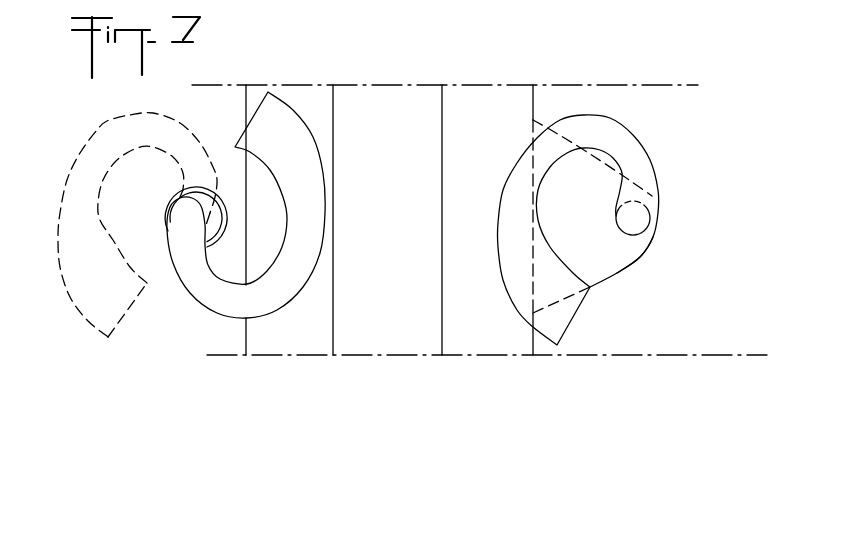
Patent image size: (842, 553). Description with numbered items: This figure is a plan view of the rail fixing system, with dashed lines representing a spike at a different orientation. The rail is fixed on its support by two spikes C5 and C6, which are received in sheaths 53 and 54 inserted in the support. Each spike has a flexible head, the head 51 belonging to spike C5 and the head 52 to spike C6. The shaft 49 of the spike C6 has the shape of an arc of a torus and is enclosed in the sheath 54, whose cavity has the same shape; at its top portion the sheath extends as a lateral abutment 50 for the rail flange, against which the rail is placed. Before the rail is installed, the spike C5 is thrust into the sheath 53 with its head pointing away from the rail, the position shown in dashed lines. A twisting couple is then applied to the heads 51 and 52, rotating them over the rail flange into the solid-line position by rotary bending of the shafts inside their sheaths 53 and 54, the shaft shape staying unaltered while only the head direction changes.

The shaft 49 is at (645, 231).
The lateral abutment 50 is at (533, 126).
The flexible head 51 is at (313, 210).
The flexible head 52 is at (508, 222).
The sheath 53 is at (177, 201).
The sheath 54 is at (637, 257).
The spike C5 is at (107, 122).
The spike C6 is at (558, 230).